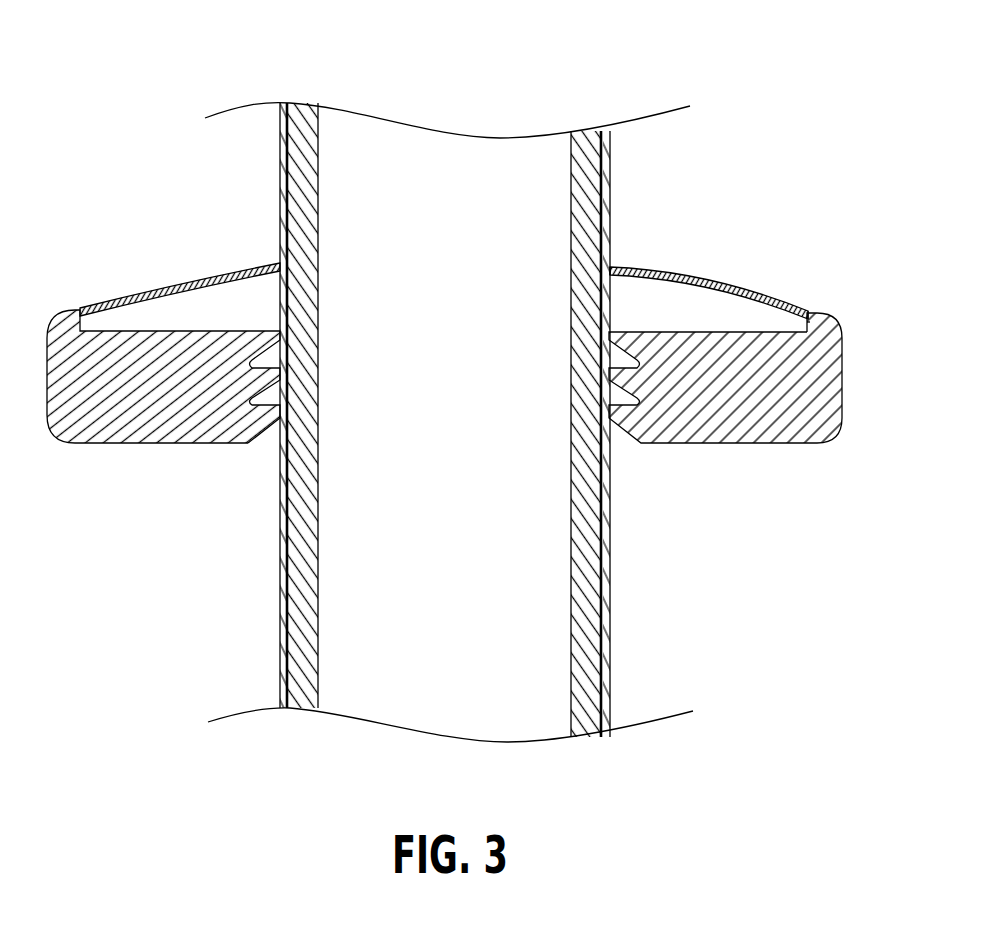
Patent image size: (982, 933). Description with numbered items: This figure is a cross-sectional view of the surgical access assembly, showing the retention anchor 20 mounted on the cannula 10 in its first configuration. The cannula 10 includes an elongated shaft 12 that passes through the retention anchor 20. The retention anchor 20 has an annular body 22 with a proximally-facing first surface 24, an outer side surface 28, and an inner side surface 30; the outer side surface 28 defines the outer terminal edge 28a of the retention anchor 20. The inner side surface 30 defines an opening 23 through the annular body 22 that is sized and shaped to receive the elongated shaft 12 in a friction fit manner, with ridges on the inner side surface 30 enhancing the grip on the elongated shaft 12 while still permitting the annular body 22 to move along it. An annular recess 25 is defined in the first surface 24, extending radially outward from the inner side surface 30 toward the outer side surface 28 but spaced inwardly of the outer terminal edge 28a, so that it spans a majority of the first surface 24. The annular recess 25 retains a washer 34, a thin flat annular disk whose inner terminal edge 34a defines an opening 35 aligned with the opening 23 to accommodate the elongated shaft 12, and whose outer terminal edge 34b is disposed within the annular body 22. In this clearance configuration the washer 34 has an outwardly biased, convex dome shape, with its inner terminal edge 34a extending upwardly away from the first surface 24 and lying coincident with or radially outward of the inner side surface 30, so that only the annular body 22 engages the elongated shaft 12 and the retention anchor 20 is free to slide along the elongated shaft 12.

The cannula 10 is at (275, 77).
The elongated shaft 12 is at (283, 212).
The retention anchor 20 is at (75, 300).
The annular body 22 is at (765, 422).
The opening 23 is at (275, 447).
The first surface 24 is at (812, 311).
The annular recess 25 is at (783, 325).
The outer side surface 28 is at (842, 405).
The outer terminal edge 28a is at (833, 337).
The inner side surface 30 is at (607, 413).
The washer 34 is at (698, 278).
The inner terminal edge 34a is at (612, 264).
The outer terminal edge 34b is at (810, 310).
The opening 35 is at (268, 255).